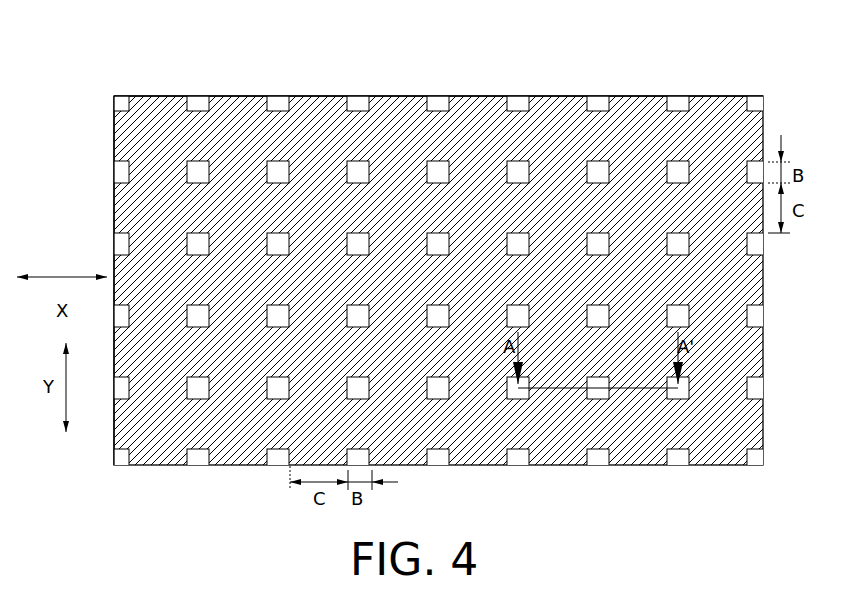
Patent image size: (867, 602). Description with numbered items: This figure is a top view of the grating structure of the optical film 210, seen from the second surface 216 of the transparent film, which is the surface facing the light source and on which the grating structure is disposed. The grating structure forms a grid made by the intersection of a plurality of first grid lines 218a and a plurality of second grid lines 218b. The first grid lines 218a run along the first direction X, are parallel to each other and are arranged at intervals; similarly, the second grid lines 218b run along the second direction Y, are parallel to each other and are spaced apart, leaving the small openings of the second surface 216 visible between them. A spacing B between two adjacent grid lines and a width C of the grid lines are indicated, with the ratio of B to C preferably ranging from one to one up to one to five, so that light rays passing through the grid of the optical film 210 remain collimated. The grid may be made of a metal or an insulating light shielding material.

The optical film 210 is at (112, 82).
The second surface 216 is at (198, 103).
The first grid lines 218a is at (114, 130).
The second grid lines 218b is at (305, 96).